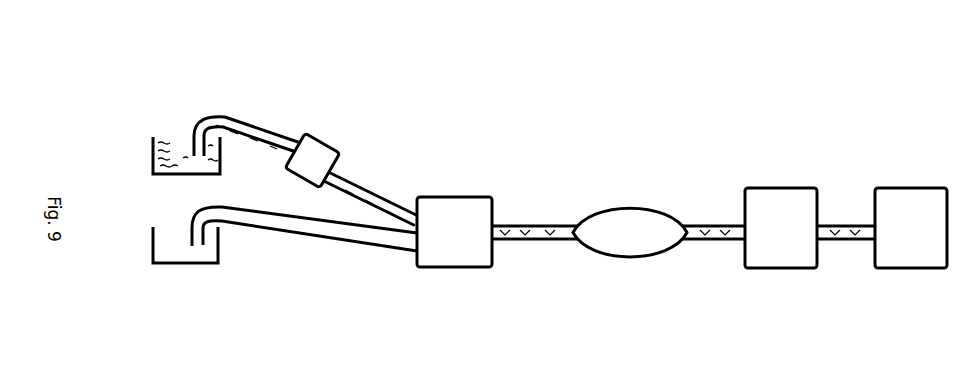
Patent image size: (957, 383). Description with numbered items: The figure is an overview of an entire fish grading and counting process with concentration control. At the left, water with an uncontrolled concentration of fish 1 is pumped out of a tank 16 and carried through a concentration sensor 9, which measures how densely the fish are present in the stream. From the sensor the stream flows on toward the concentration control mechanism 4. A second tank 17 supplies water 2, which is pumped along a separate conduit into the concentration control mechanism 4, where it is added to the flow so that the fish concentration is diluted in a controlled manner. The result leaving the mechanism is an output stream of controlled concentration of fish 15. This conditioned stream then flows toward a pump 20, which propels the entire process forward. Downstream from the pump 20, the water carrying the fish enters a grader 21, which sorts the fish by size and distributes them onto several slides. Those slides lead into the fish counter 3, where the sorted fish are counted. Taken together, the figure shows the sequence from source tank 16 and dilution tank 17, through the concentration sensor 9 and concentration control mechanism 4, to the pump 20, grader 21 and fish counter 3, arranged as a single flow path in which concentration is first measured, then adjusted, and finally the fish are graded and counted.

The water with uncontrolled concentration of fish 1 is at (255, 122).
The water 2 is at (313, 308).
The fish counter 3 is at (900, 188).
The concentration control mechanism 4 is at (455, 197).
The concentration sensor 9 is at (315, 137).
The controlled concentration of fish 15 is at (538, 224).
The tank 16 is at (174, 150).
The tank 17 is at (193, 312).
The pump 20 is at (623, 209).
The grader 21 is at (772, 188).